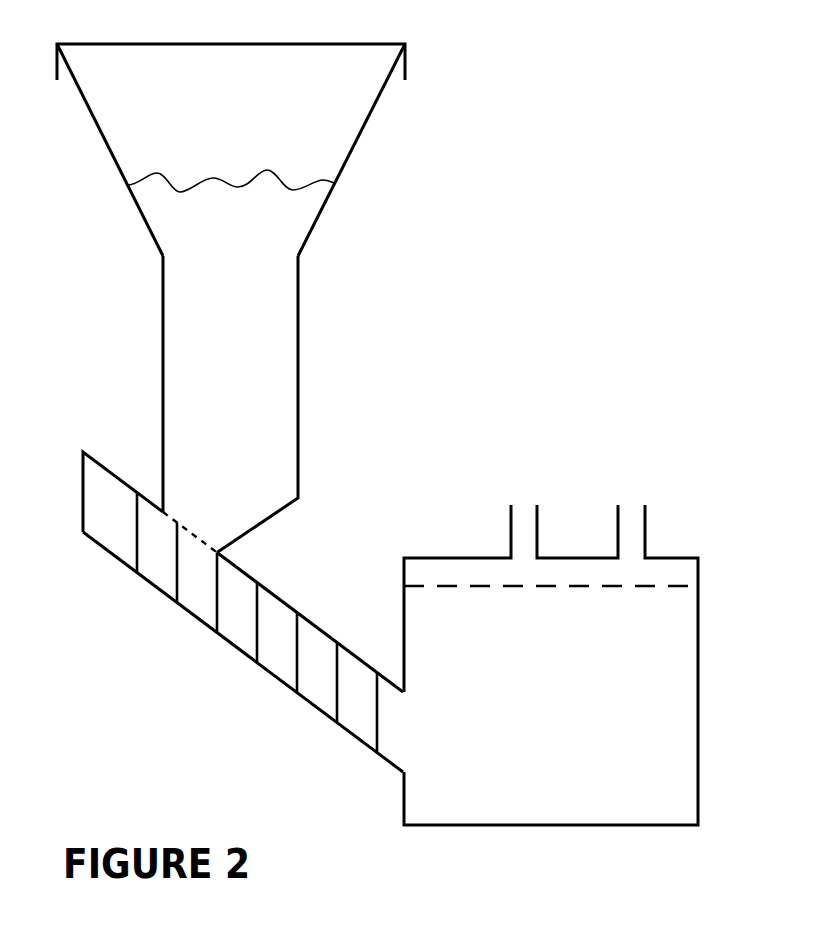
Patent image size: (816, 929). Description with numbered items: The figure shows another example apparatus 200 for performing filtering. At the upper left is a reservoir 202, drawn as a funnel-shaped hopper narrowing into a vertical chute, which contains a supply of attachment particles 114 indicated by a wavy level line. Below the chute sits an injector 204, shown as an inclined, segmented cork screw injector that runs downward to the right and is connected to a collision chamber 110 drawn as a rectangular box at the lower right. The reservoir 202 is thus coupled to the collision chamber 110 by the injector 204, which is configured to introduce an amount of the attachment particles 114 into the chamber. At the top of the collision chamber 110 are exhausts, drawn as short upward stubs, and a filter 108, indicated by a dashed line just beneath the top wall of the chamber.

The apparatus 200 is at (565, 82).
The reservoir 202 is at (270, 58).
The attachment particles 114 is at (285, 347).
The injector 204 is at (272, 603).
The filter 108 is at (485, 572).
The collision chamber 110 is at (513, 813).